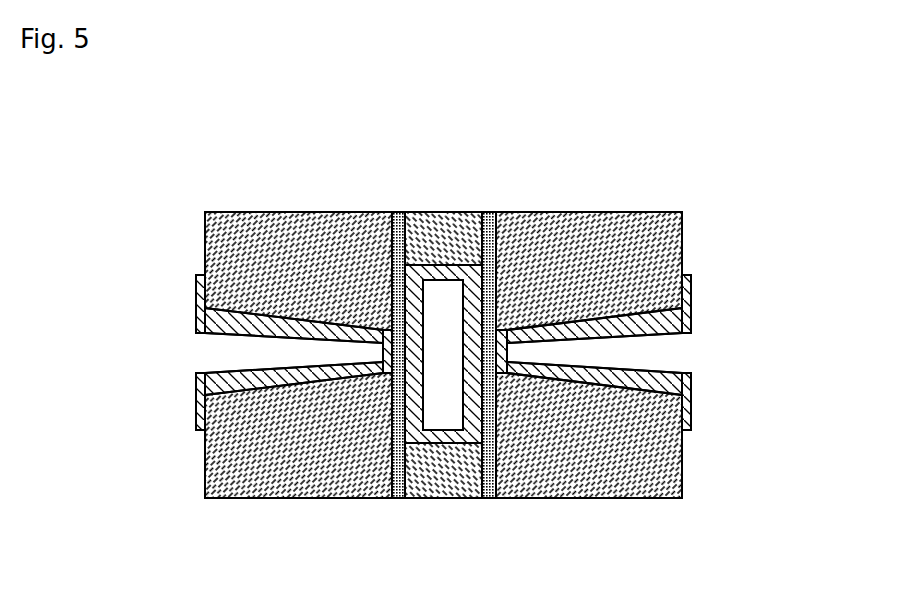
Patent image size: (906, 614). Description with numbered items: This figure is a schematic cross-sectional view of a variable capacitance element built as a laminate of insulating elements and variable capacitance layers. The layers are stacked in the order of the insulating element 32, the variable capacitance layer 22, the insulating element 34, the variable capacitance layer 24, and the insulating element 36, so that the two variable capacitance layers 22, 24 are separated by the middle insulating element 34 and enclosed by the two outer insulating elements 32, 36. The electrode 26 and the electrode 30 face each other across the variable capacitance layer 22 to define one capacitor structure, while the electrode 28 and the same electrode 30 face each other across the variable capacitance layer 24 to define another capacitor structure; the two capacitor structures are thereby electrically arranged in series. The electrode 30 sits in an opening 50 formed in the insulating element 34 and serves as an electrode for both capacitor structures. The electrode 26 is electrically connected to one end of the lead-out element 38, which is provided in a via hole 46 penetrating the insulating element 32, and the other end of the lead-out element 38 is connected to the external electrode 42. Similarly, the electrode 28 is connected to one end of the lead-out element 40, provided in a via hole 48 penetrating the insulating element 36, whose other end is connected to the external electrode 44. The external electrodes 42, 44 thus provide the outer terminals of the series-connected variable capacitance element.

The variable capacitance layer 22 is at (400, 214).
The variable capacitance layer 24 is at (493, 214).
The electrode 26 is at (388, 332).
The electrode 28 is at (508, 373).
The electrode 30 is at (452, 437).
The insulating element 32 is at (275, 222).
The insulating element 34 is at (430, 487).
The insulating element 36 is at (613, 222).
The lead-out element 38 is at (262, 383).
The lead-out element 40 is at (627, 383).
The external electrode 42 is at (207, 310).
The external electrode 44 is at (685, 310).
The via hole 46 is at (220, 350).
The via hole 48 is at (672, 350).
The opening 50 is at (430, 413).